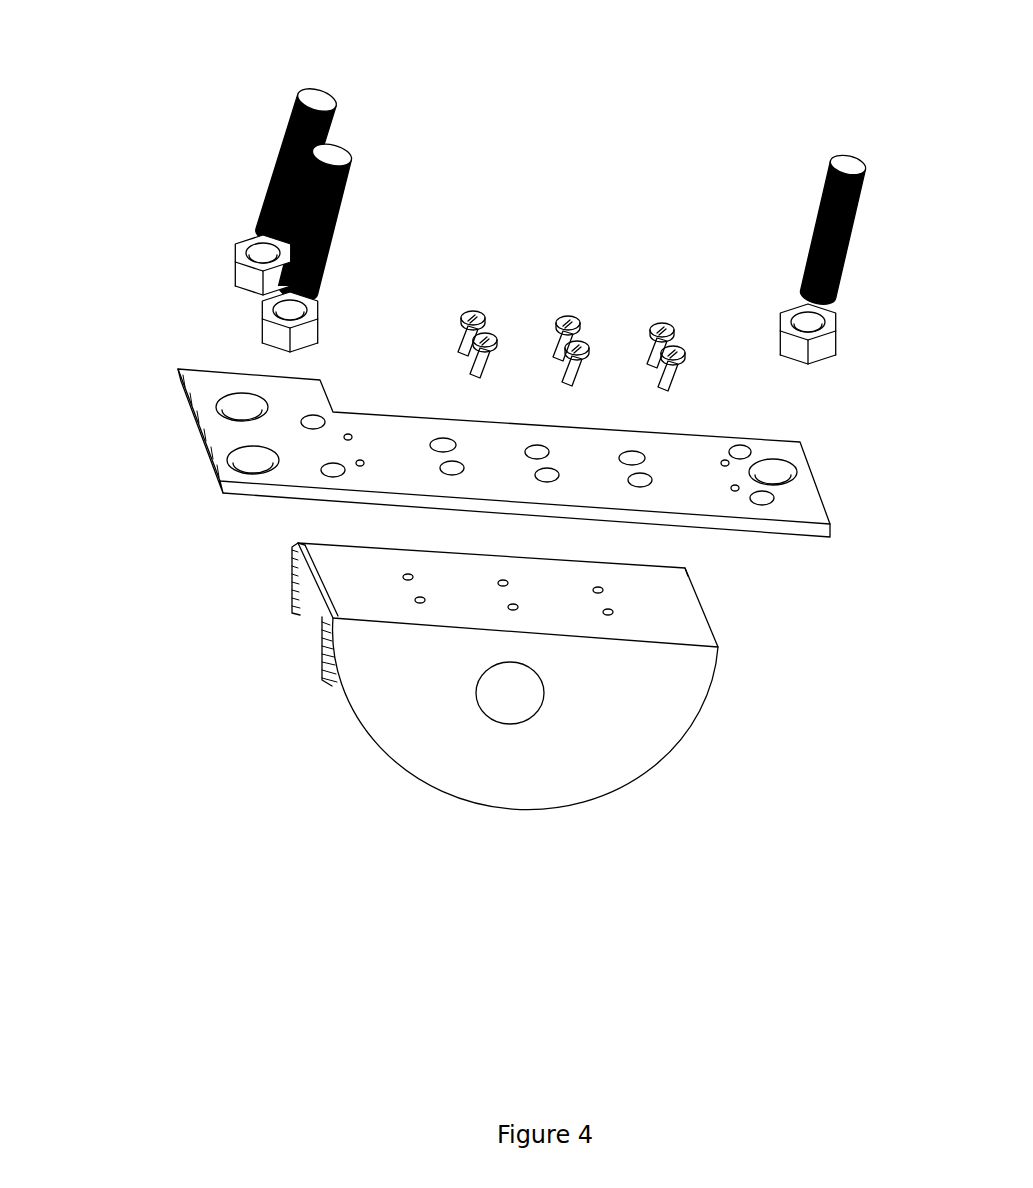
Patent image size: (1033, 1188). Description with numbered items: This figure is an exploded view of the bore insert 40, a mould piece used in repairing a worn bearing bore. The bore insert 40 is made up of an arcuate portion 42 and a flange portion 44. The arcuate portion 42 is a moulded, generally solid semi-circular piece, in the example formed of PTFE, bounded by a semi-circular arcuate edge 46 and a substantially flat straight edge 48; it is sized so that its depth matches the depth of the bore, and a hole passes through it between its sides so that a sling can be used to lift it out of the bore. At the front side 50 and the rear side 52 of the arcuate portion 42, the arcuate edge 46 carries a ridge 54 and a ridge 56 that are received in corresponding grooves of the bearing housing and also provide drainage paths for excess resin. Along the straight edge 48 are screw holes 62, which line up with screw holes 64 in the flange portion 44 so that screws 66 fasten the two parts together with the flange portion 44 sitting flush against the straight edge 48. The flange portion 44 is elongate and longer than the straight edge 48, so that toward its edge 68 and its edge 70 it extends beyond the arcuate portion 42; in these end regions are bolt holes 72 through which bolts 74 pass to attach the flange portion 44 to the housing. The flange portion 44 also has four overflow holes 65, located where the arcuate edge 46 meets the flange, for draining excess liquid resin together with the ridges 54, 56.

The bore insert 40 is at (822, 659).
The arcuate portion 42 is at (657, 742).
The flange portion 44 is at (391, 413).
The arcuate edge 46 is at (306, 598).
The straight edge 48 is at (302, 543).
The front side 50 is at (569, 818).
The rear side 52 is at (275, 550).
The ridge 54 is at (325, 637).
The ridge 56 is at (290, 565).
The screw holes 62 is at (600, 589).
The screw holes 64 is at (429, 443).
The overflow holes 65 is at (350, 432).
The screws 66 is at (474, 314).
The edge of flange portion 68 is at (158, 437).
The edge of flange portion 70 is at (850, 477).
The bolt holes 72 is at (233, 395).
The bolts 74 is at (284, 134).